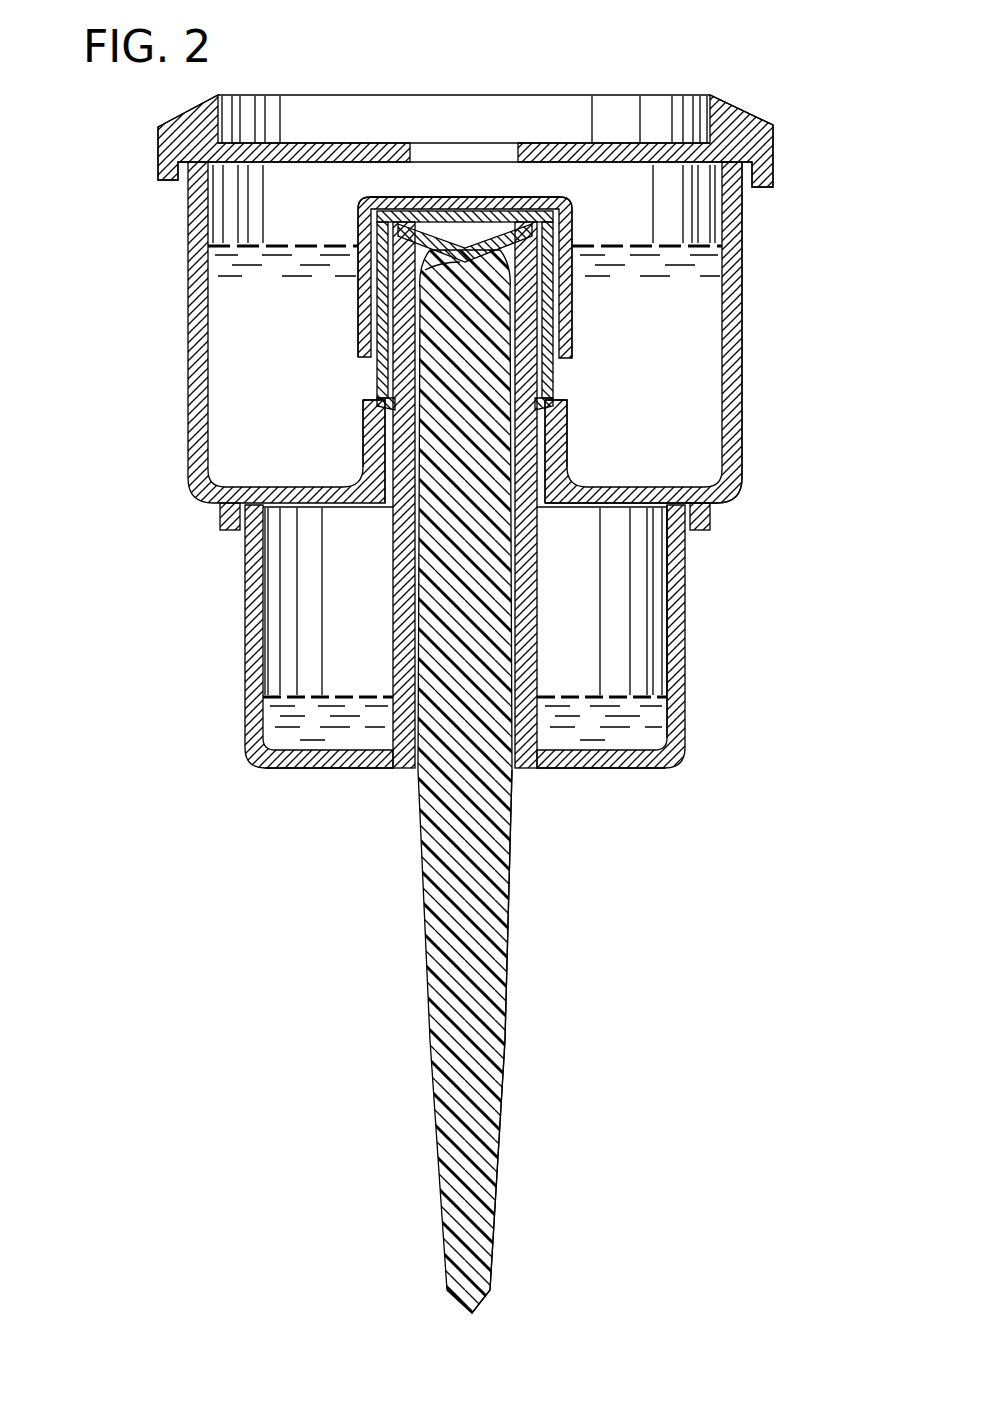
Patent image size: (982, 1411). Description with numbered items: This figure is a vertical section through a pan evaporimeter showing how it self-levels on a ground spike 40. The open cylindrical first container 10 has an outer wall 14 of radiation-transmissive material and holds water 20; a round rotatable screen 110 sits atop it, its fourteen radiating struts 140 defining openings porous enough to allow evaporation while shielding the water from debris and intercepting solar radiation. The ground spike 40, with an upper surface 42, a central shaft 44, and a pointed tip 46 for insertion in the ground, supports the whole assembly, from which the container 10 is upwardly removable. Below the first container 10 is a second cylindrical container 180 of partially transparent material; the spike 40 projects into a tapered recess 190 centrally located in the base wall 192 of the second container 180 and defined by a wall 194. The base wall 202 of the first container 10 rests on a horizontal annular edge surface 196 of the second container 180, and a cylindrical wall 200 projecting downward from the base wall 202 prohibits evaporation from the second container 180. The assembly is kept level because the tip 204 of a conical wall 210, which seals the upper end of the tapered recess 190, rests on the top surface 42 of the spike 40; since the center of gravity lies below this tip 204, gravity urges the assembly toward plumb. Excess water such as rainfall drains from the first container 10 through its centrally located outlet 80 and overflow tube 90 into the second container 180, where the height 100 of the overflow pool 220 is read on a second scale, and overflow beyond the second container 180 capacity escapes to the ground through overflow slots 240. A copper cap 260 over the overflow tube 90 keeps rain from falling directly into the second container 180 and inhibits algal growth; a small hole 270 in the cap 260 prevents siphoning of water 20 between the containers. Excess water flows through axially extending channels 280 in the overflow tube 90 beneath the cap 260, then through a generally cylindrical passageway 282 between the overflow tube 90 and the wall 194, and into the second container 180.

The first container 10 is at (750, 477).
The outer wall 14 is at (188, 215).
The water 20 is at (700, 402).
The ground spike 40 is at (422, 1082).
The upper surface 42 is at (480, 272).
The central shaft 44 is at (485, 985).
The pointed tip 46 is at (472, 1313).
The outlet 80 is at (447, 197).
The overflow tube 90 is at (363, 432).
The height of the water surface 100 is at (640, 690).
The rotatable screen 110 is at (158, 155).
The radiating struts 140 is at (282, 140).
The second container 180 is at (235, 716).
The tapered recess 190 is at (400, 768).
The base wall 192 is at (640, 770).
The wall 194 is at (545, 452).
The annular edge surface 196 is at (685, 490).
The cylindrical wall 200 is at (712, 522).
The base wall 202 is at (225, 500).
The tip 204 is at (430, 262).
The conical wall 210 is at (470, 205).
The overflow pool 220 is at (650, 735).
The overflow slots 240 is at (253, 618).
The copper cap 260 is at (358, 322).
The small hole 270 is at (466, 185).
The axially extending channels 280 is at (378, 382).
The cylindrical passageway 282 is at (393, 412).